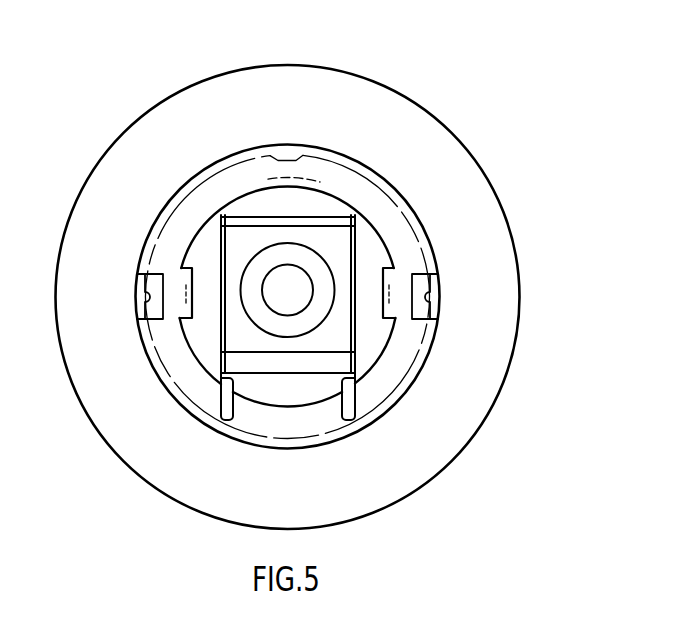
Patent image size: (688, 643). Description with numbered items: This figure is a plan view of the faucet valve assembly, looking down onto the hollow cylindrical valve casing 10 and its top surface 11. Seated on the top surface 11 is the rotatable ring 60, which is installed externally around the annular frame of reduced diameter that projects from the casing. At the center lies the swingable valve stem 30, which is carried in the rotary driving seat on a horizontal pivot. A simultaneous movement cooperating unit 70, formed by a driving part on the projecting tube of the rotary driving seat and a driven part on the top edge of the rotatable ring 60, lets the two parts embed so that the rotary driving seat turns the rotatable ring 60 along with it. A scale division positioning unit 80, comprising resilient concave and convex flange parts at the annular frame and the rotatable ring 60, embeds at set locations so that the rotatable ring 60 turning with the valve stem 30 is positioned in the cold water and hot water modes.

The valve casing 10 is at (519, 288).
The top surface 11 is at (483, 365).
The valve stem 30 is at (262, 217).
The rotatable ring 60 is at (441, 240).
The simultaneous movement cooperating unit 70 is at (363, 288).
The scale division positioning unit 80 is at (168, 293).